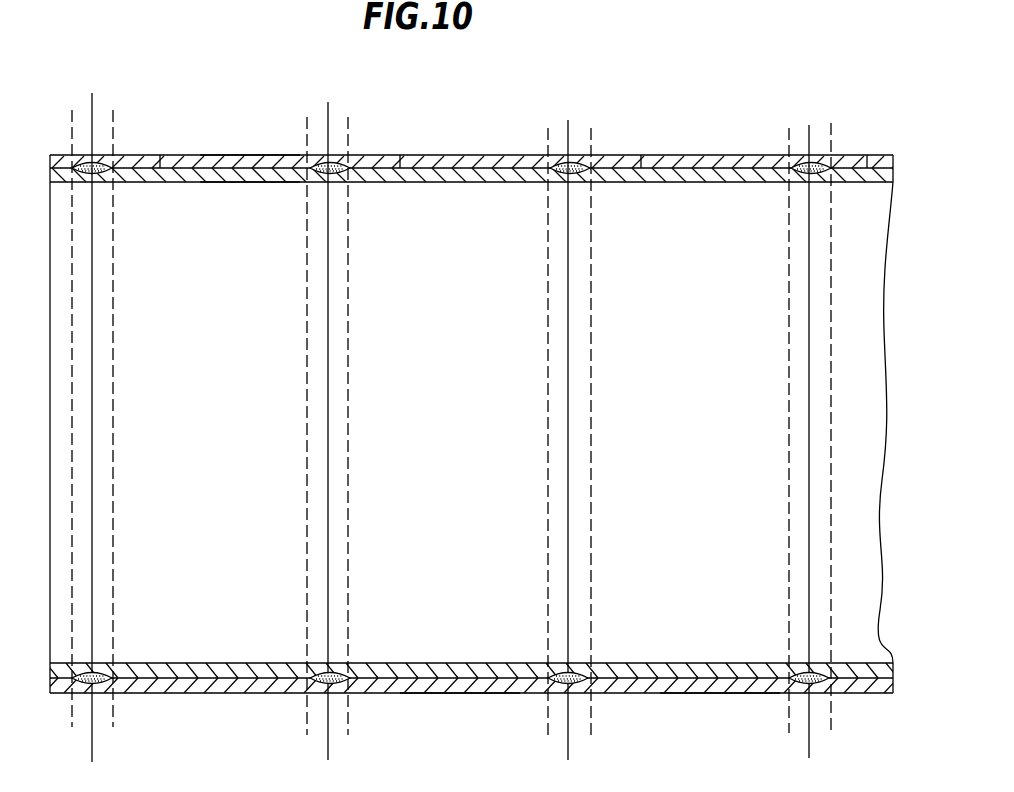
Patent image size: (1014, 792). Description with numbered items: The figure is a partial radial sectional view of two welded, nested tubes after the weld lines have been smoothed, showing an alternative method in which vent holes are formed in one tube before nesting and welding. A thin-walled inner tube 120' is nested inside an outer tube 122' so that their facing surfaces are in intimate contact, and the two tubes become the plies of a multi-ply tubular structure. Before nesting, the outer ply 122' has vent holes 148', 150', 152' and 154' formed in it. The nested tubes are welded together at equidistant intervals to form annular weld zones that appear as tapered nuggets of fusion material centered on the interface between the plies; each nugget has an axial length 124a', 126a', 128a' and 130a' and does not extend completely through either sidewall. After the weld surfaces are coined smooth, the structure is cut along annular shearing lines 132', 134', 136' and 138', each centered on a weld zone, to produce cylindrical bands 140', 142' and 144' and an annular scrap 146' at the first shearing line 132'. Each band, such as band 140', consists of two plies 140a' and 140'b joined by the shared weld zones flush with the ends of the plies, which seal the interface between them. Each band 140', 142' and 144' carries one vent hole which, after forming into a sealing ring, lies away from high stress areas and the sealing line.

The inner tube 120' is at (478, 202).
The outer tube 122' is at (477, 120).
The axial length of weld zone 124a' is at (132, 200).
The axial length of weld zone 126a' is at (365, 200).
The axial length of weld zone 128a' is at (607, 200).
The axial length of weld zone 130a' is at (839, 202).
The shearing line 132' is at (111, 417).
The shearing line 134' is at (346, 416).
The shearing line 136' is at (587, 416).
The shearing line 138' is at (817, 415).
The cylindrical band 140' is at (471, 718).
The ply 140'b is at (250, 113).
The ply 140a' is at (250, 209).
The cylindrical band 142' is at (460, 734).
The cylindrical band 144' is at (720, 735).
The annular scrap 146' is at (52, 464).
The vent hole 148' is at (191, 120).
The vent hole 150' is at (425, 120).
The vent hole 152' is at (673, 120).
The vent hole 154' is at (881, 120).